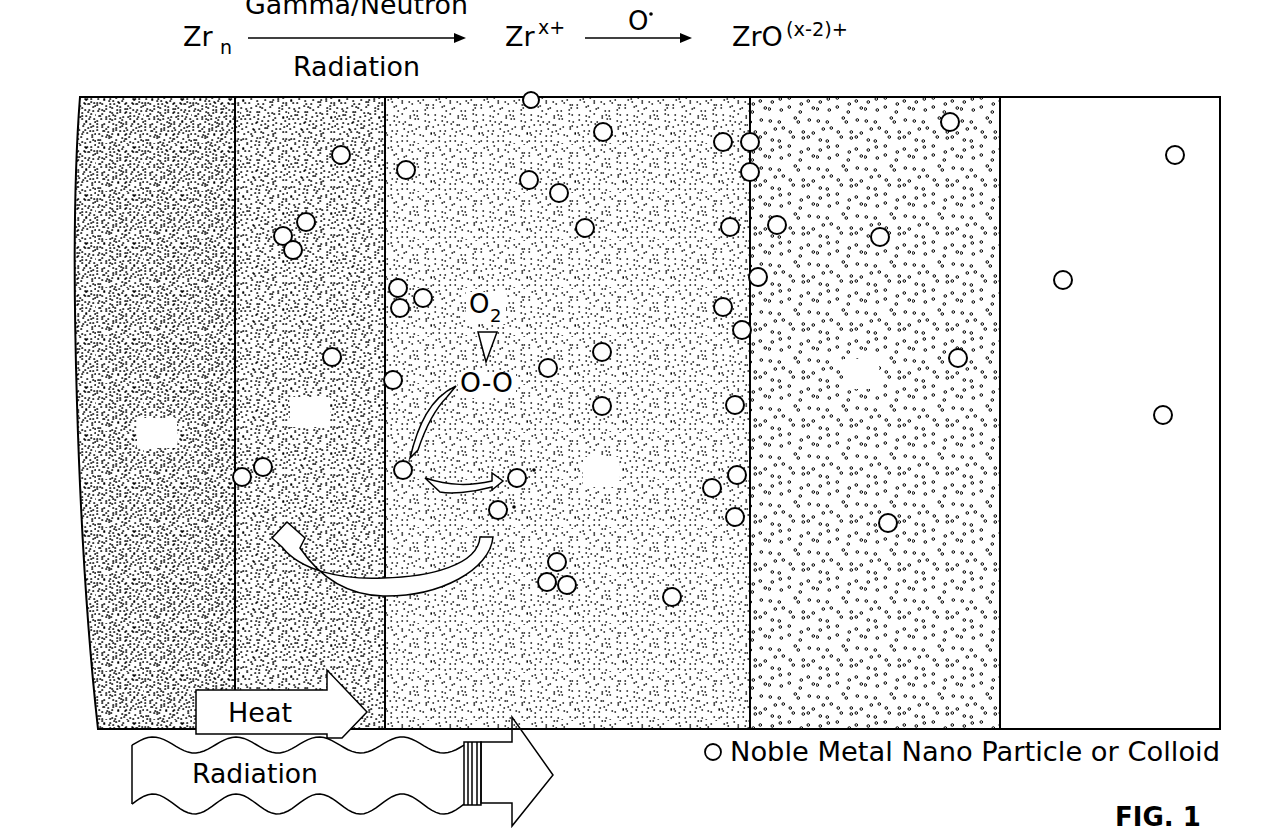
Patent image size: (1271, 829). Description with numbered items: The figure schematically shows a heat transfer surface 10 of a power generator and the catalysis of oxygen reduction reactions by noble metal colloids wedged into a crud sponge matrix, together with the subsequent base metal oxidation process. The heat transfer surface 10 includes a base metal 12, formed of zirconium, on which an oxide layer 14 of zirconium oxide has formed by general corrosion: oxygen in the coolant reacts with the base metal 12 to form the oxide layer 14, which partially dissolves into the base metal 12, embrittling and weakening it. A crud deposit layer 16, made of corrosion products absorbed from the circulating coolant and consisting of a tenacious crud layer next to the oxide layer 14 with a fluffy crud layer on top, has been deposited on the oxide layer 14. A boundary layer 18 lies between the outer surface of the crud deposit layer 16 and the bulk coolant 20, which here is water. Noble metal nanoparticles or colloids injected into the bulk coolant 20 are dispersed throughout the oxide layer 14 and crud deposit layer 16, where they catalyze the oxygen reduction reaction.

The heat transfer surface 10 is at (131, 43).
The base metal 12 is at (170, 446).
The oxide layer 14 is at (322, 423).
The crud deposit layer 16 is at (613, 483).
The boundary layer 18 is at (873, 385).
The bulk coolant 20 is at (1117, 370).